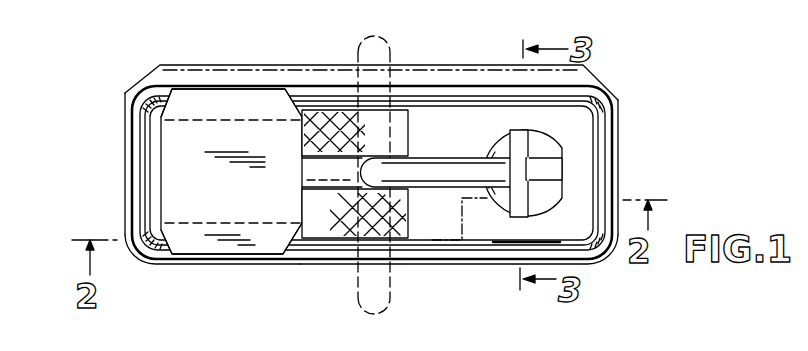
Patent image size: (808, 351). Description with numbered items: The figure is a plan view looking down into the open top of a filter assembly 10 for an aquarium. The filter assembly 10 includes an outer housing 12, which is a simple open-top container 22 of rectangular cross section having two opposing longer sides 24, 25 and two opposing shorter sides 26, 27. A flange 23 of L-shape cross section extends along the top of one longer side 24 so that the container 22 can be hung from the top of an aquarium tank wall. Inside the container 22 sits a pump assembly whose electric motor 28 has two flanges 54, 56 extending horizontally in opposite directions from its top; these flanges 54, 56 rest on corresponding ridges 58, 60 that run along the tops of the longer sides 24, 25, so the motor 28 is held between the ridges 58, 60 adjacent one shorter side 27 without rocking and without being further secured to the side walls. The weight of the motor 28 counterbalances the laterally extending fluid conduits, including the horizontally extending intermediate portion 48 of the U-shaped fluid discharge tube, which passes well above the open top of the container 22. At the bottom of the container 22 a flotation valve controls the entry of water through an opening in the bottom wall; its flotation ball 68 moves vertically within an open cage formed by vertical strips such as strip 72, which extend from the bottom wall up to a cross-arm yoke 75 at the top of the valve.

The filter assembly 10 is at (92, 153).
The outer housing 12 is at (215, 272).
The open-top container 22 is at (323, 264).
The flange 23 is at (583, 72).
The longer side 24 is at (433, 86).
The longer side 25 is at (450, 264).
The shorter side 26 is at (618, 133).
The shorter side 27 is at (125, 217).
The electric motor 28 is at (177, 183).
The intermediate portion 48 is at (433, 158).
The flange 54 is at (217, 97).
The flange 56 is at (260, 246).
The ridge 58 is at (132, 97).
The ridge 60 is at (167, 259).
The flotation ball 68 is at (540, 152).
The vertical strip 72 is at (553, 190).
The cross-arm yoke 75 is at (548, 172).